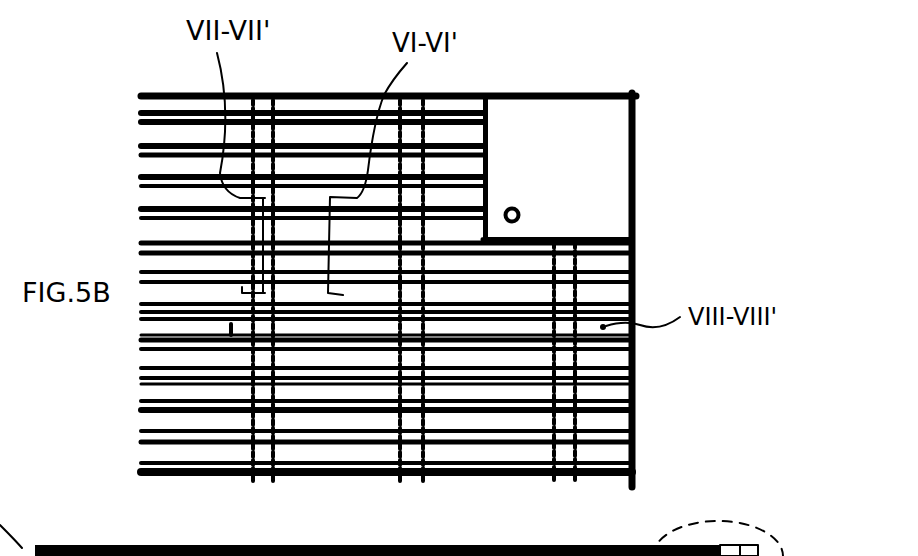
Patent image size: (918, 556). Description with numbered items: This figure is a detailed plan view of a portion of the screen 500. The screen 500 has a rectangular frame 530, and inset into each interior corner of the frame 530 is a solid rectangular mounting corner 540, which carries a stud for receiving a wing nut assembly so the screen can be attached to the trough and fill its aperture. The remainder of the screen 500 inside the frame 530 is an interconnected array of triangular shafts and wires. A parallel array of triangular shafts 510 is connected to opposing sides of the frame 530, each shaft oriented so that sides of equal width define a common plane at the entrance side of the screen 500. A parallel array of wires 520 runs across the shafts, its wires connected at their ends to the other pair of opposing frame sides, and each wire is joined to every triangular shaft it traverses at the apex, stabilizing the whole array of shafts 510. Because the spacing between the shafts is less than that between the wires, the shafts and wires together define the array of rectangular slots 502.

The screen 500 is at (100, 537).
The rectangular slots 502 is at (320, 133).
The parallel array of triangular shafts 510 is at (130, 103).
The parallel array of wires 520 is at (590, 490).
The rectangular frame 530 is at (550, 90).
The mounting corner 540 is at (597, 165).